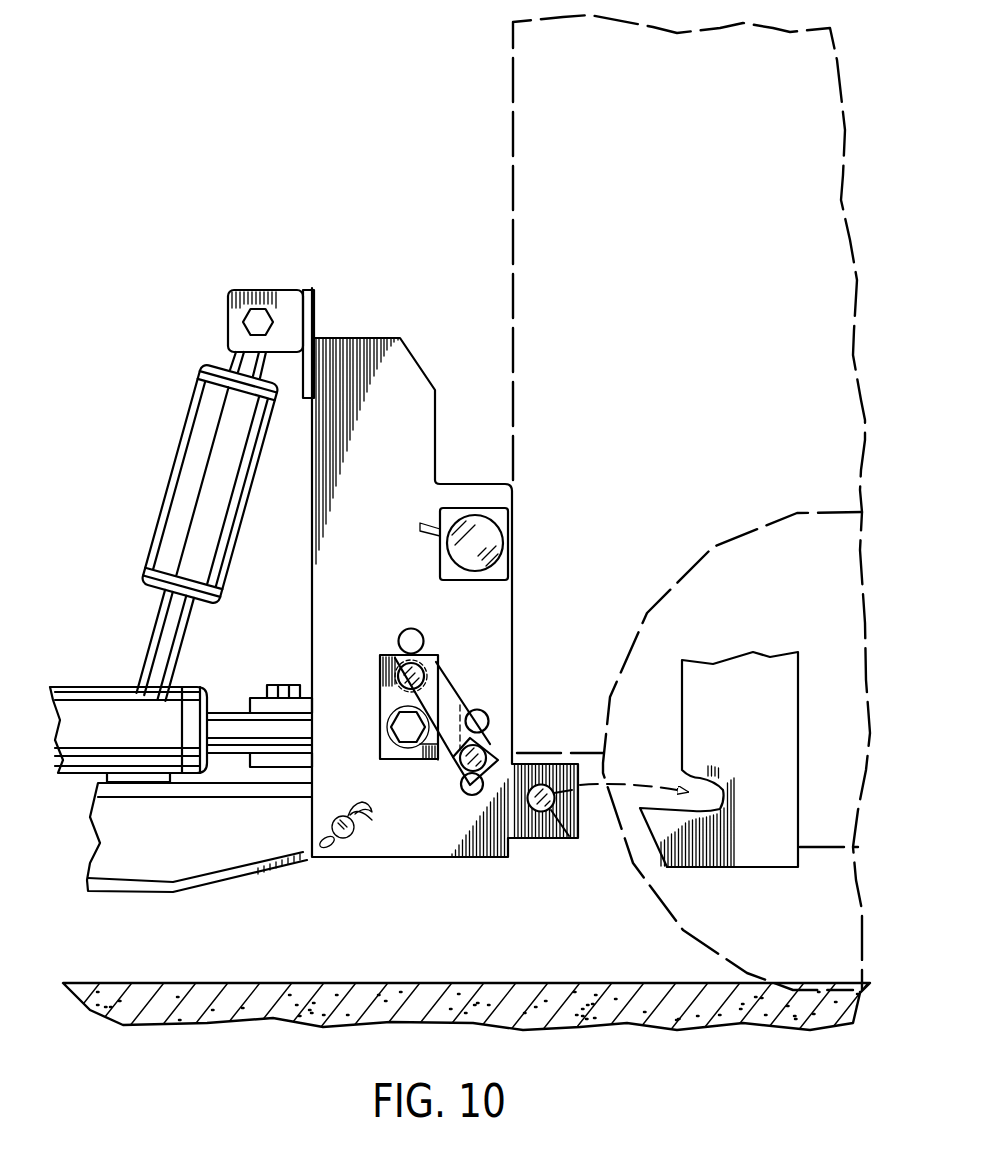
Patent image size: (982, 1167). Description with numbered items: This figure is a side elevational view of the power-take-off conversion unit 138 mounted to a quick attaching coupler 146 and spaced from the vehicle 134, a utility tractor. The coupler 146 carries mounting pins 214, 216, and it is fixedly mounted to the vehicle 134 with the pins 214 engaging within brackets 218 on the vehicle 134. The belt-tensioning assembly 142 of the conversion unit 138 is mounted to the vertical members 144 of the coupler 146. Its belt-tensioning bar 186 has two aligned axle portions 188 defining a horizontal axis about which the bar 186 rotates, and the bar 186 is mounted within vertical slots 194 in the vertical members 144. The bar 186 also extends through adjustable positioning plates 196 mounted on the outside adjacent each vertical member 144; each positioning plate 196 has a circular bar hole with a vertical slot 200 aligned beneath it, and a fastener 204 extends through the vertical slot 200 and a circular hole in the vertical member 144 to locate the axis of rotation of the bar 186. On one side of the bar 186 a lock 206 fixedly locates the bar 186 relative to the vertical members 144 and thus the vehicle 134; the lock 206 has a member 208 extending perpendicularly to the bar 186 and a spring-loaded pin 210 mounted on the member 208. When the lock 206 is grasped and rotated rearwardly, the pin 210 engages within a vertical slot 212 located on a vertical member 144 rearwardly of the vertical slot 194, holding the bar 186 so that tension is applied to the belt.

The vehicle 134 is at (508, 152).
The power-take-off conversion unit 138 is at (294, 636).
The belt-tensioning assembly 142 is at (414, 790).
The vertical members 144 is at (360, 336).
The coupler 146 is at (158, 432).
The belt-tensioning bar 186 is at (406, 665).
The axle portions 188 is at (438, 678).
The vertical slots 194 is at (414, 640).
The adjustable positioning plates 196 is at (380, 715).
The vertical slot 200 is at (427, 760).
The fastener 204 is at (395, 757).
The lock 206 is at (498, 710).
The member 208 is at (440, 700).
The spring-loaded pin 210 is at (487, 742).
The vertical slot 212 is at (487, 797).
The mounting pins 214 is at (569, 840).
The mounting pins 216 is at (505, 532).
The brackets 218 is at (712, 870).